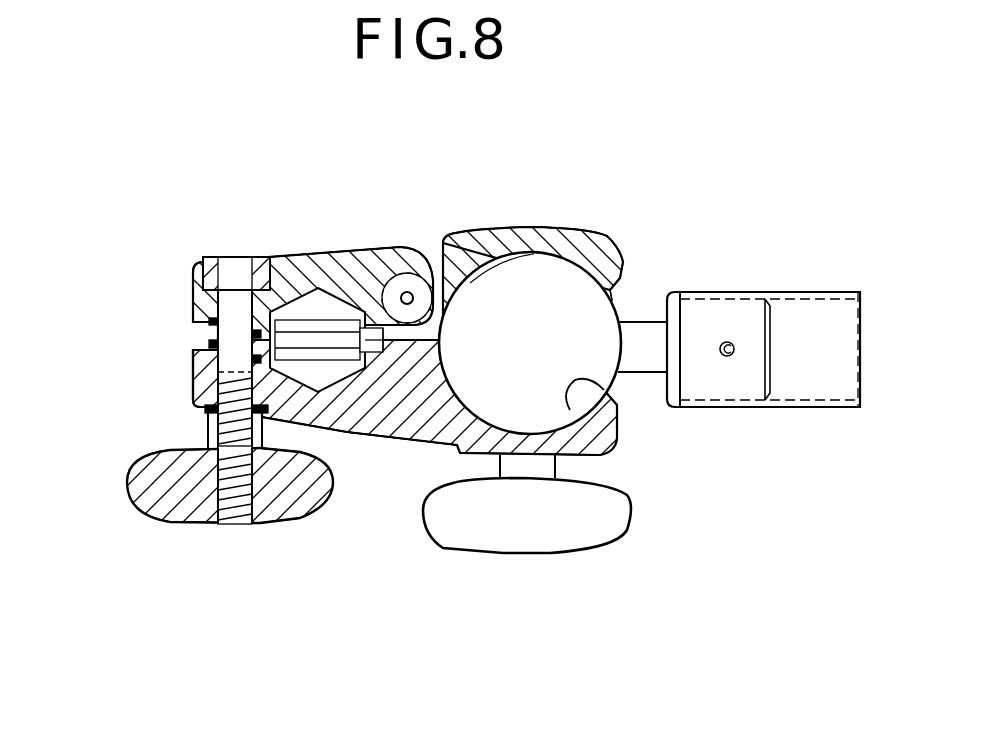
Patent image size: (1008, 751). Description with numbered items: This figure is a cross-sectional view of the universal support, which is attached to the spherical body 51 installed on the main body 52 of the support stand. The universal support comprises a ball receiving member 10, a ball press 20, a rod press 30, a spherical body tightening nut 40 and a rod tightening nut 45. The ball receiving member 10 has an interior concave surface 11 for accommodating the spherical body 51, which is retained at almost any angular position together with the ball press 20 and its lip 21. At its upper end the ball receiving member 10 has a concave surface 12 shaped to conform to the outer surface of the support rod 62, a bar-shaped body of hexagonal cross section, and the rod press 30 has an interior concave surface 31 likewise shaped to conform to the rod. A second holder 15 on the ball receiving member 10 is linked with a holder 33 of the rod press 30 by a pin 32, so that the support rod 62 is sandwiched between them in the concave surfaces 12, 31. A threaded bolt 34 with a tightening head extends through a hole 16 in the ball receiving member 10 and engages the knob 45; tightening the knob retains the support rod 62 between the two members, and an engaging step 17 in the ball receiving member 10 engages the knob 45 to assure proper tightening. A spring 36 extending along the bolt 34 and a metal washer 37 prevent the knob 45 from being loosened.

The ball receiving member 10 is at (412, 437).
The concave surface 11 is at (606, 386).
The concave surface 12 is at (404, 358).
The second holder 15 is at (419, 272).
The hole 16 is at (215, 385).
The engaging step 17 is at (280, 450).
The ball press 20 is at (536, 230).
The cap lip 21 is at (598, 258).
The rod press 30 is at (340, 256).
The interior concave surface 31 is at (300, 300).
The pin 32 is at (438, 268).
The holder 33 is at (338, 363).
The threaded bolt 34 is at (240, 268).
The spring 36 is at (200, 350).
The metal washer 37 is at (213, 410).
The spherical body tightening nut 40 is at (612, 548).
The rod tightening nut (knob) 45 is at (170, 502).
The spherical body 51 is at (554, 359).
The main body 52 is at (830, 408).
The support rod 62 is at (355, 255).